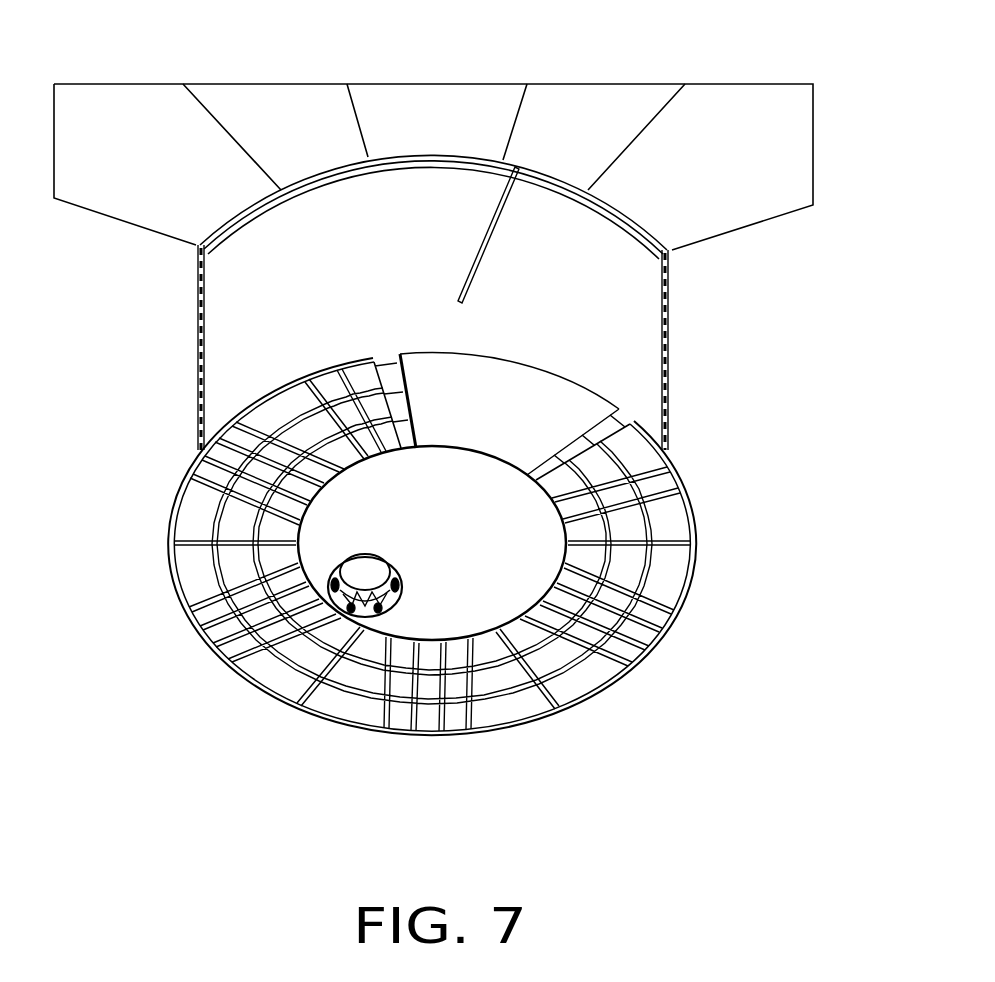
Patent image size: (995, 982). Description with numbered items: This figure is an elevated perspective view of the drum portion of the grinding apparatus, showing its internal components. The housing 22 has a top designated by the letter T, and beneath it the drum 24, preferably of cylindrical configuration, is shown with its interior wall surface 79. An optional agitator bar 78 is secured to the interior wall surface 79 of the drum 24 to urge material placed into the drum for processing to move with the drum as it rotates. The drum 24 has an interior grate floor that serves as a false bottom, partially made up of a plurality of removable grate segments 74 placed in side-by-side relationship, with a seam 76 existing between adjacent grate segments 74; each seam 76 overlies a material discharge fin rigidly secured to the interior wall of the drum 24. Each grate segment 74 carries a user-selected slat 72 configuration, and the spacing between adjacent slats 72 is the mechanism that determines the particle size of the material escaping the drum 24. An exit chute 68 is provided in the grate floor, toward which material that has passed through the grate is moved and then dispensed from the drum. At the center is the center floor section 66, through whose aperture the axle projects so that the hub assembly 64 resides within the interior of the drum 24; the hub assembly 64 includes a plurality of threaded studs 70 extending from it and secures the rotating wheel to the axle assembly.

The top T is at (605, 103).
The housing 22 is at (727, 120).
The drum 24 is at (670, 388).
The interior wall surface of the drum 79 is at (638, 292).
The agitator bar 78 is at (470, 268).
The exit chute 68 is at (485, 392).
The seam 76 is at (183, 543).
The slat 72 is at (253, 622).
The grate segments 74 is at (685, 515).
The center floor section 66 is at (399, 525).
The hub assembly 64 is at (413, 567).
The threaded studs 70 is at (398, 575).